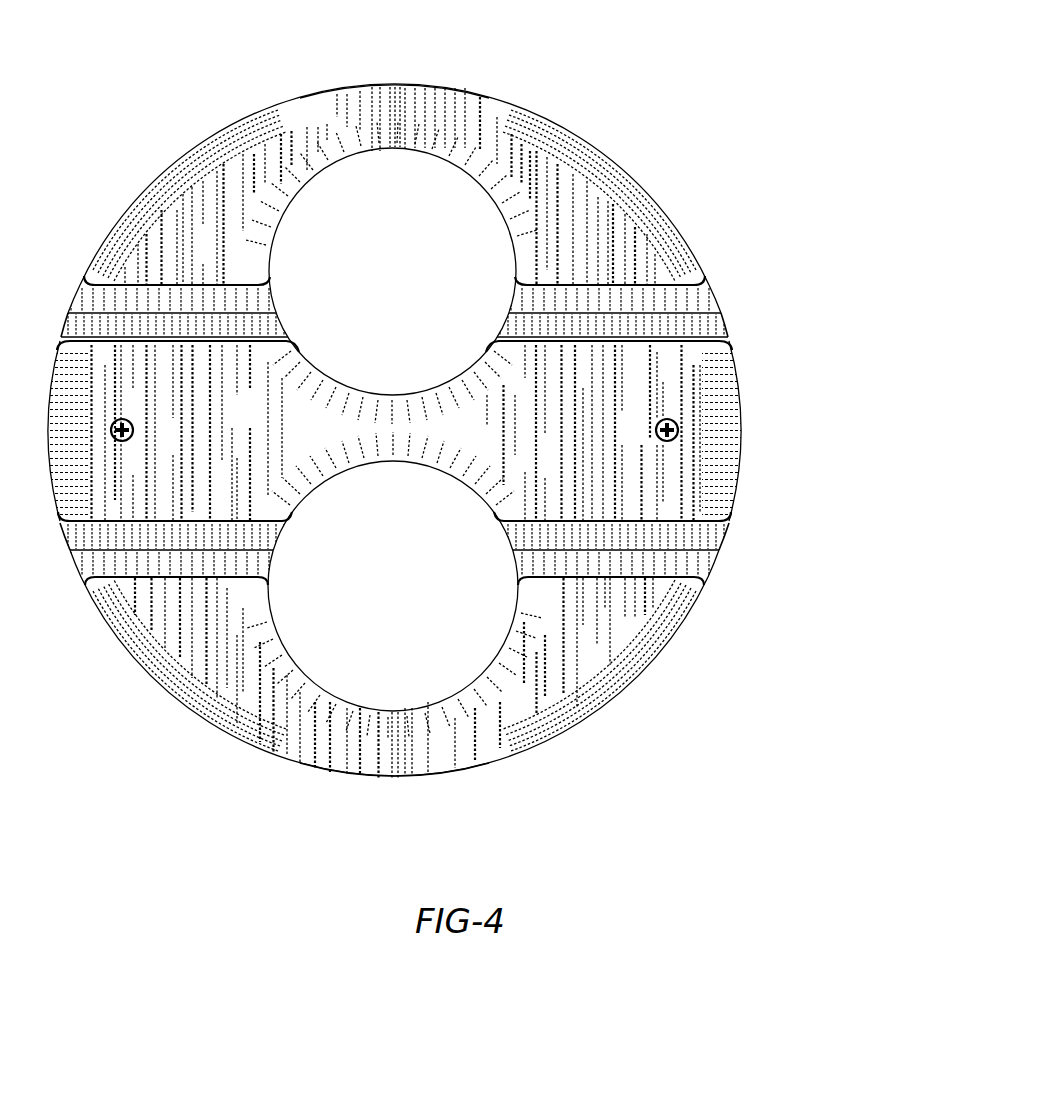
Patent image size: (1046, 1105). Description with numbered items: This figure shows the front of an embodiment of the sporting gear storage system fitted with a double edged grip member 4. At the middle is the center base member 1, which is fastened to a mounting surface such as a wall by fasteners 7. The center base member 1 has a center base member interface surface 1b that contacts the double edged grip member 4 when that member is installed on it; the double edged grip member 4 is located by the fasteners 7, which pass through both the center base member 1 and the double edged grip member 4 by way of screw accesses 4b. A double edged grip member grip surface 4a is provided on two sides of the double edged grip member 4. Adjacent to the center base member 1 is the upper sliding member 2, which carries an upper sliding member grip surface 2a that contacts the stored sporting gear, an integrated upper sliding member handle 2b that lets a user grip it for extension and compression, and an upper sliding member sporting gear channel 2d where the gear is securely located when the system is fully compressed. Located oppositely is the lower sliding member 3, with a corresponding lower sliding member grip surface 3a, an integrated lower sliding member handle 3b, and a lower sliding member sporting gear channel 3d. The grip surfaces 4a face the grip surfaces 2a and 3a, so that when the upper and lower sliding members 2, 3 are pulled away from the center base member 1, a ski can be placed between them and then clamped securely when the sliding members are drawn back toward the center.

The center base member 1 is at (732, 332).
The center base member interface surface 1b is at (662, 537).
The upper sliding member 2 is at (652, 193).
The upper sliding member grip surface 2a is at (650, 287).
The upper sliding member handle 2b is at (405, 107).
The upper sliding member sporting gear channel 2d is at (662, 308).
The lower sliding member 3 is at (658, 667).
The lower sliding member grip surface 3a is at (695, 580).
The lower sliding member handle 3b is at (395, 752).
The lower sliding member sporting gear channel 3d is at (695, 565).
The double edged grip member 4 is at (743, 387).
The double edged grip member grip surface 4a is at (662, 343).
The screw accesses 4b is at (680, 428).
The fasteners 7 is at (670, 440).